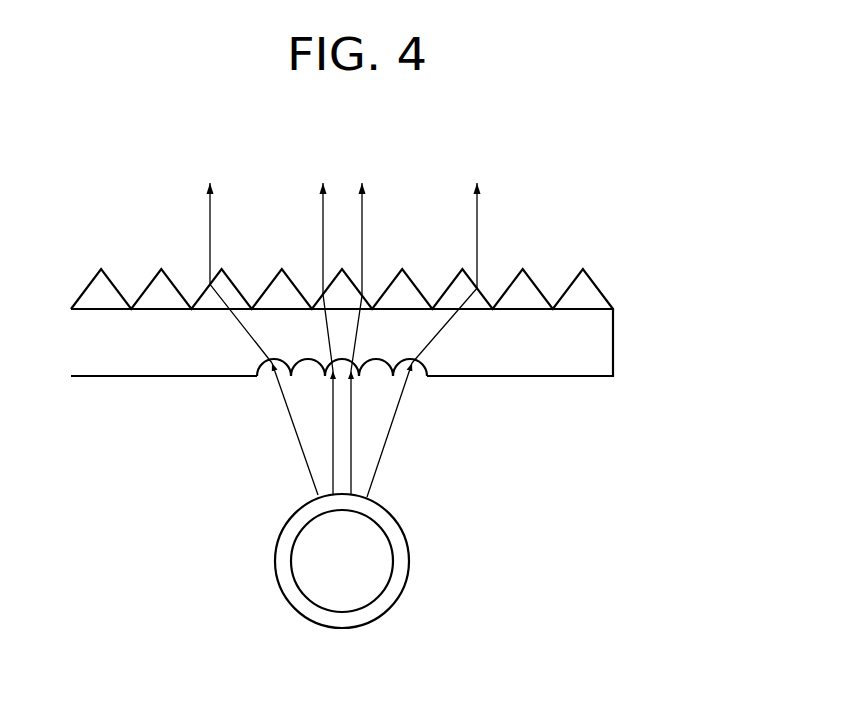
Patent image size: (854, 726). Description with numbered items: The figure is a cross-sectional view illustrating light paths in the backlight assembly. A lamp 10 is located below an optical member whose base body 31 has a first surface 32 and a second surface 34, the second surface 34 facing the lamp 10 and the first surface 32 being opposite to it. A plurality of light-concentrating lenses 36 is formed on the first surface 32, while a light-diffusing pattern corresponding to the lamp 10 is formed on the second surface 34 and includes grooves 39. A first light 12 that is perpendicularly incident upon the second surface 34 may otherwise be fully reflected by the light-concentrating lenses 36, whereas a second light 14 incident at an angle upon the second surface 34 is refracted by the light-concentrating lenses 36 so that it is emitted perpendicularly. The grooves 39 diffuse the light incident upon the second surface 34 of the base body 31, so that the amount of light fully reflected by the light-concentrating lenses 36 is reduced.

The lamp 10 is at (275, 562).
The first light 12 is at (333, 457).
The second light 14 is at (390, 430).
The base body 31 is at (406, 298).
The first surface 32 is at (386, 247).
The second surface 34 is at (386, 298).
The light-concentrating lens 36 is at (241, 291).
The groove 39 is at (373, 362).